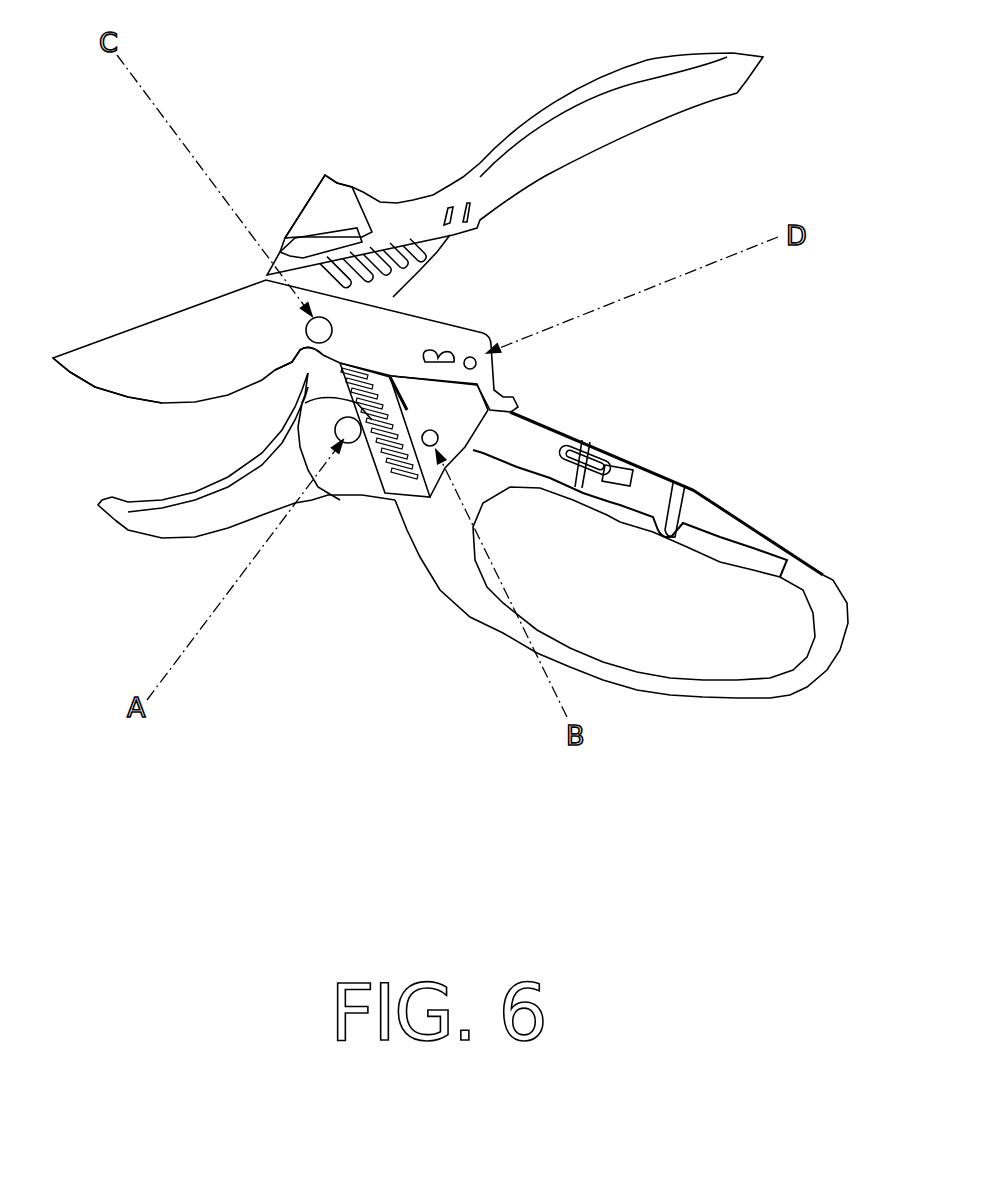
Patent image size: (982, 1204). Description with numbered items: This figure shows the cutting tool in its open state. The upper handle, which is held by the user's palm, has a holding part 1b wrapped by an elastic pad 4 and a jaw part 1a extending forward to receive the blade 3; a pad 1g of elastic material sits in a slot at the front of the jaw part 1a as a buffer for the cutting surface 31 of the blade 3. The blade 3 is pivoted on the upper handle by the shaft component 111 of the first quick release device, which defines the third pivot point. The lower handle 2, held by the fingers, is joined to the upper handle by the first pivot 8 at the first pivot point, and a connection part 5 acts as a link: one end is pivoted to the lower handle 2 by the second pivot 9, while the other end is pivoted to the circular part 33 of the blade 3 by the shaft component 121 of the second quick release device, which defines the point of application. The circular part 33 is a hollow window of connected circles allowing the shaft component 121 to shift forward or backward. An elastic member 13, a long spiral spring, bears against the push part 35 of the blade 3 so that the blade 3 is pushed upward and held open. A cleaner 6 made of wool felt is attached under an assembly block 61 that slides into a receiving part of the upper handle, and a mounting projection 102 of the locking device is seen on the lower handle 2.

The lower handle 2 is at (437, 600).
The blade 3 is at (108, 317).
The elastic pad 4 is at (602, 75).
The connection part 5 is at (452, 417).
The cleaner 6 is at (307, 248).
The first pivot 8 is at (347, 438).
The second pivot 9 is at (428, 443).
The elastic member 13 is at (387, 460).
The cutting surface 31 is at (108, 385).
The circular part 33 is at (456, 362).
The push part 35 is at (273, 368).
The assembly block 61 is at (320, 197).
The mounting projection 102 is at (608, 468).
The shaft component 111 is at (315, 328).
The shaft component 121 is at (478, 362).
The jaw part 1a is at (202, 528).
The holding part 1b is at (444, 246).
The pad 1g is at (105, 508).